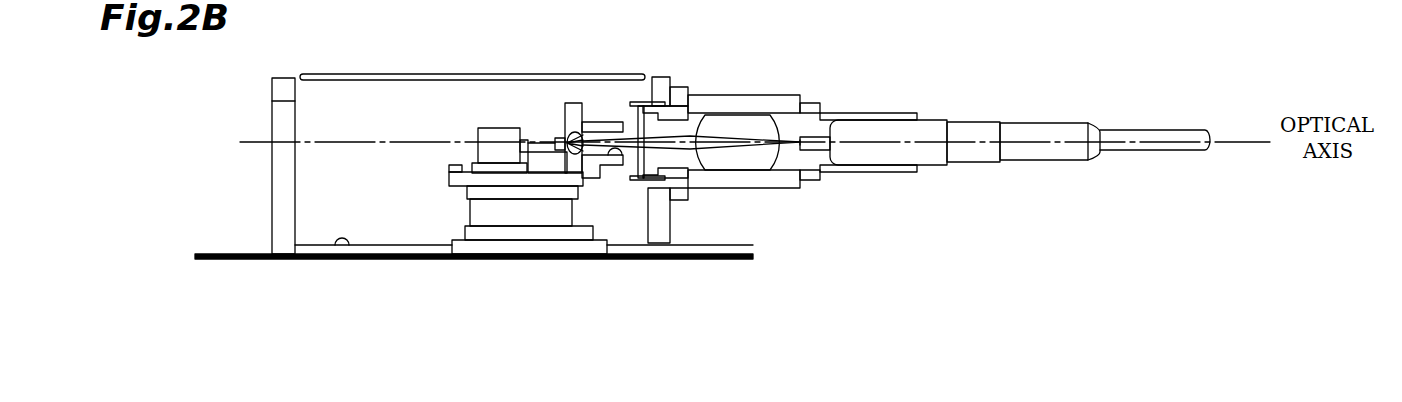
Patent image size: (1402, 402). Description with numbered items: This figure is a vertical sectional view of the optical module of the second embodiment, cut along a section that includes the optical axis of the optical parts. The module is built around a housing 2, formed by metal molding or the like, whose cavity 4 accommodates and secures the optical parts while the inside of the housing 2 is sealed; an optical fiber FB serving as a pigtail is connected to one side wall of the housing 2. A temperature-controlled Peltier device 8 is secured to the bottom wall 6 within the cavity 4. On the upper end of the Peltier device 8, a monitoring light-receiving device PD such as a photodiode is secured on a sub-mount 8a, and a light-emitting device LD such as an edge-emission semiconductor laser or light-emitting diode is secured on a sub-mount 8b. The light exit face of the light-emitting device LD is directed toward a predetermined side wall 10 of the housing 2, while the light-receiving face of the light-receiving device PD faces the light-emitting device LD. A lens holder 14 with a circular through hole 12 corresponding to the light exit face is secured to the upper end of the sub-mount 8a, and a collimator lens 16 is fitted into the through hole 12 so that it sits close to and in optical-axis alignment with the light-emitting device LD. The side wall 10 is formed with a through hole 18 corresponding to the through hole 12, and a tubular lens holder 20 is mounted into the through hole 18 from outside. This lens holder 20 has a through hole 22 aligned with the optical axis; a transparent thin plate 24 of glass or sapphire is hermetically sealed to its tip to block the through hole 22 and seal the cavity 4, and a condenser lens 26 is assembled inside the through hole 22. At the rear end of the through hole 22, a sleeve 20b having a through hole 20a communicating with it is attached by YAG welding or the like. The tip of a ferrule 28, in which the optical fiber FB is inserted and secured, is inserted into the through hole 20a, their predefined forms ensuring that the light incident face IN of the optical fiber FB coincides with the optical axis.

The housing 2 is at (283, 120).
The cavity 4 is at (323, 199).
The bottom wall 6 is at (346, 248).
The Peltier device 8 is at (473, 215).
The sub-mount 8a is at (493, 193).
The sub-mount 8b is at (527, 177).
The side wall 10 is at (663, 223).
The through hole 12 is at (614, 150).
The lens holder 14 is at (592, 122).
The collimator lens 16 is at (567, 108).
The through hole 18 is at (678, 100).
The tubular lens holder 20 is at (770, 96).
The through hole 20a is at (873, 158).
The sleeve 20b is at (917, 168).
The through hole 22 is at (697, 110).
The transparent thin plate 24 is at (638, 158).
The condenser lens 26 is at (748, 167).
The ferrule 28 is at (925, 128).
The light-receiving device PD is at (523, 128).
The light-emitting device LD is at (560, 138).
The light incident face IN is at (798, 137).
The optical fiber FB is at (1060, 122).